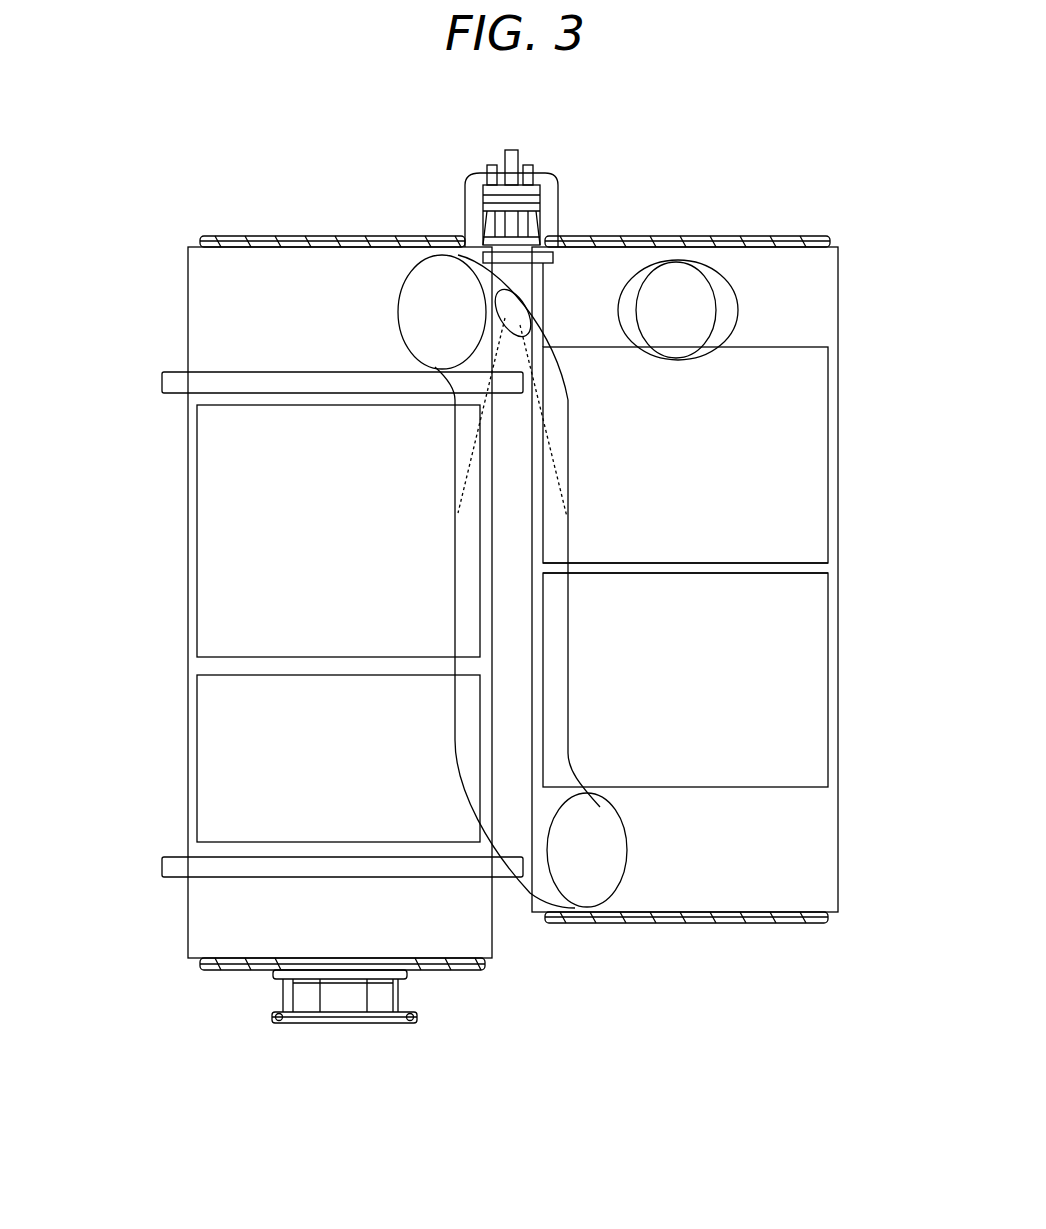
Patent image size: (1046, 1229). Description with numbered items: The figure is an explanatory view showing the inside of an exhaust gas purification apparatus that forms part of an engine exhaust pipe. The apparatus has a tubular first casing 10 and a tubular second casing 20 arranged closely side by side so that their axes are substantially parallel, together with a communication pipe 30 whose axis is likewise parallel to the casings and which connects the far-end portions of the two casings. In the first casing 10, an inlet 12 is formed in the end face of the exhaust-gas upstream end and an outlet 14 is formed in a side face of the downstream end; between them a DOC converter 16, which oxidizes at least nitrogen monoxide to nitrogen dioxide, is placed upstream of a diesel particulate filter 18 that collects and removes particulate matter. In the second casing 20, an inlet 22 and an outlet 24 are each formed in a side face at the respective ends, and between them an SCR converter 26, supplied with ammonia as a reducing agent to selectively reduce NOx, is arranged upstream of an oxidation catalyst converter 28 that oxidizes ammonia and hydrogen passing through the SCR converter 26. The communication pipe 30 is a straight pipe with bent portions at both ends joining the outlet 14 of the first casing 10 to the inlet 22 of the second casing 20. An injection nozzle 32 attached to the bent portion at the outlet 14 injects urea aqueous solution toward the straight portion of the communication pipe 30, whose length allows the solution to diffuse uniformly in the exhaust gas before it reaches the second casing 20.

The first casing 10 is at (188, 905).
The inlet 12 is at (333, 1023).
The outlet 14 is at (448, 285).
The DOC converter 16 is at (212, 712).
The diesel particulate filter 18 is at (212, 510).
The second casing 20 is at (838, 869).
The inlet 22 is at (597, 865).
The outlet 24 is at (690, 308).
The SCR converter 26 is at (807, 754).
The oxidation catalyst converter 28 is at (789, 458).
The communication pipe 30 is at (568, 612).
The injection nozzle 32 is at (558, 188).